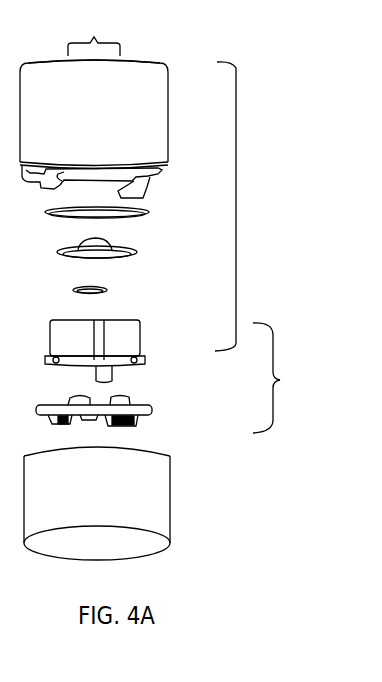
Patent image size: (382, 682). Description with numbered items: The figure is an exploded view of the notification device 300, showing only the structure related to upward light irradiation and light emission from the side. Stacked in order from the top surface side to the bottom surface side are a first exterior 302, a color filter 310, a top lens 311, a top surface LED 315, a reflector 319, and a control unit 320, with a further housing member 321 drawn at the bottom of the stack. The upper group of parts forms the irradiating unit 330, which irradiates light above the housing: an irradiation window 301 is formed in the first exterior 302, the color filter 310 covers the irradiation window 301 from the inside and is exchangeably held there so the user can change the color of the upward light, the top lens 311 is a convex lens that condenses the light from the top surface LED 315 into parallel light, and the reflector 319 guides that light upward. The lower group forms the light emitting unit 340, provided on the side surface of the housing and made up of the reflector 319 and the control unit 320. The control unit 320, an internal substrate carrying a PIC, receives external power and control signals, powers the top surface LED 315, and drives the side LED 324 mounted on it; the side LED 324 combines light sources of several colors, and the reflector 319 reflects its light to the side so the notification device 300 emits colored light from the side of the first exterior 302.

The notification device 300 is at (246, 49).
The irradiation window 301 is at (94, 36).
The first exterior 302 is at (168, 119).
The color filter 310 is at (150, 213).
The top lens 311 is at (137, 253).
The top surface LED 315 is at (107, 290).
The reflector 319 is at (143, 338).
The control unit 320 is at (153, 411).
The housing 321 is at (172, 465).
The side LED 324 is at (78, 401).
The irradiating unit 330 is at (236, 183).
The light emitting unit 340 is at (280, 380).